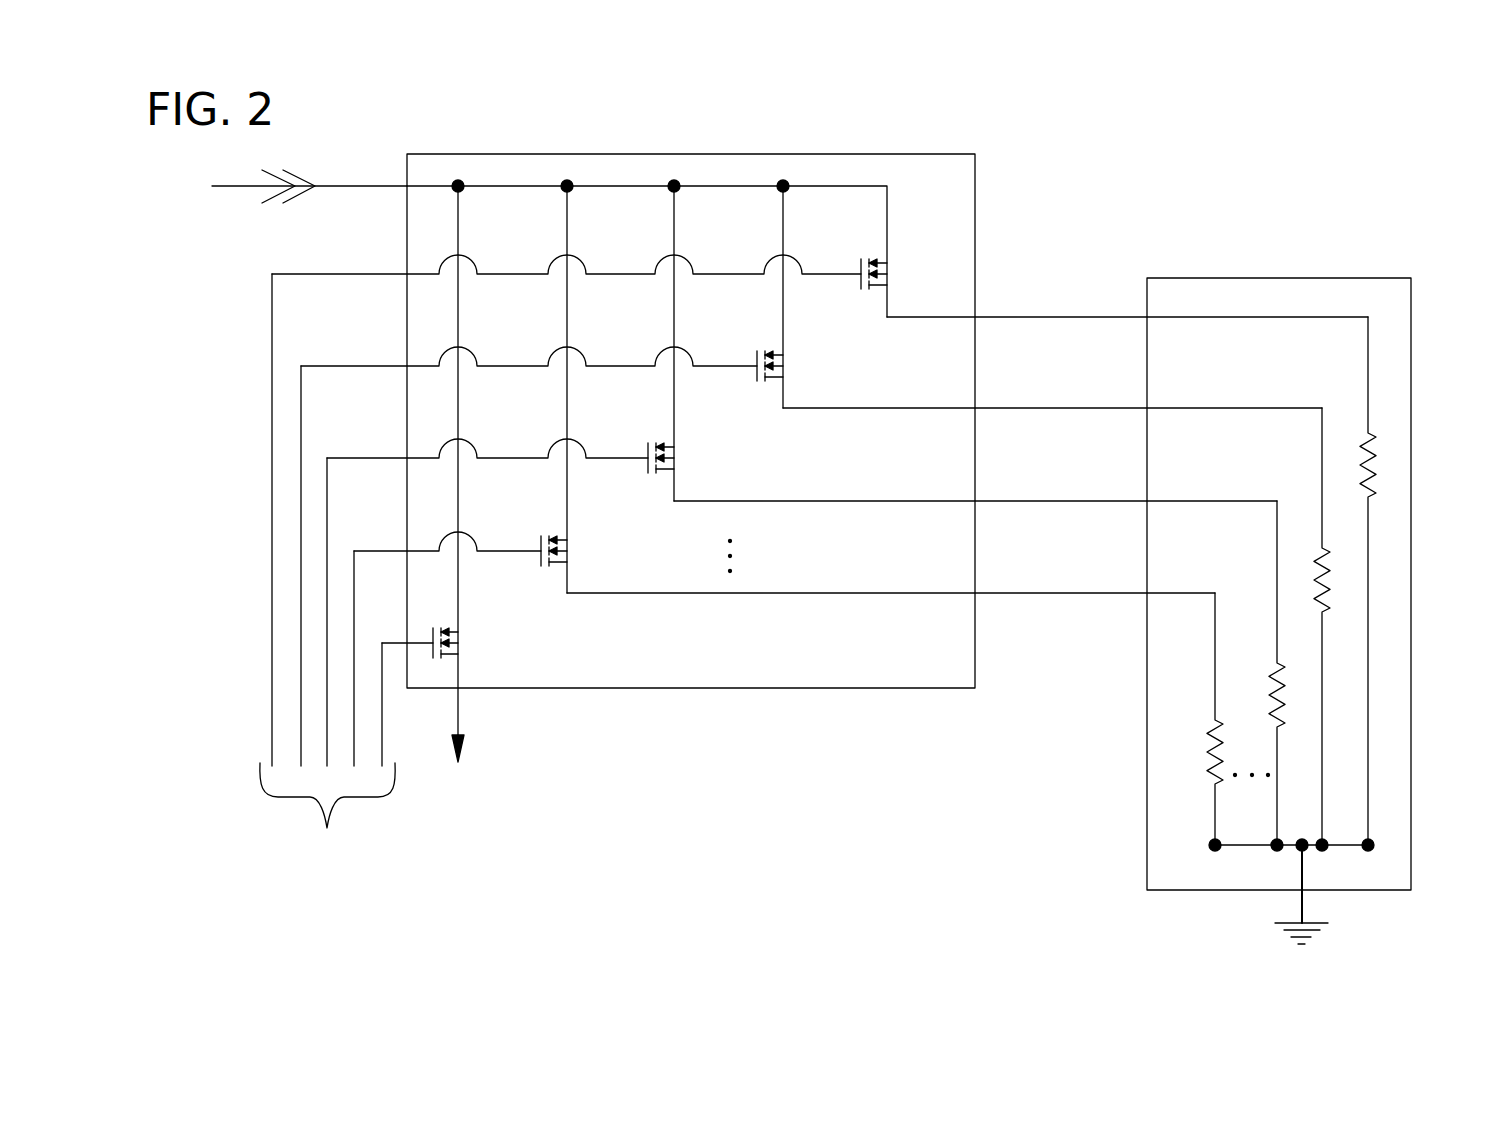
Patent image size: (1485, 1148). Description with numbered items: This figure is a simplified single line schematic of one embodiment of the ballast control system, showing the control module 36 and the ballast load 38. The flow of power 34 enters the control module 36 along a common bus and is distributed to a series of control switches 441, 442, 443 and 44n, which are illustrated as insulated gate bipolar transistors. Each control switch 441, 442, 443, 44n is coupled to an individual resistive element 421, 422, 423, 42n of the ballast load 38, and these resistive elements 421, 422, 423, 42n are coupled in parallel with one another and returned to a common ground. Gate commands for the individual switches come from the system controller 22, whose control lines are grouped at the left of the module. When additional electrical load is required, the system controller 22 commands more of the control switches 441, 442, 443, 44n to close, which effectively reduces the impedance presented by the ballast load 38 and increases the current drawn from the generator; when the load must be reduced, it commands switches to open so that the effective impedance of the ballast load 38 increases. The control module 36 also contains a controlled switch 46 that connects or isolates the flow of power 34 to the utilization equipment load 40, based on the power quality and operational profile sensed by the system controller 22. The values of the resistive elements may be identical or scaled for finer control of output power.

The flow of power 34 is at (347, 186).
The control module 36 is at (693, 154).
The ballast load 38 is at (1279, 278).
The control switch 441 is at (889, 266).
The control switch 442 is at (785, 359).
The control switch 443 is at (676, 451).
The control switch 44n is at (569, 544).
The controlled switch 46 is at (460, 636).
The utilization equipment load 40 is at (466, 773).
The system controller 22 is at (327, 577).
The resistive element 421 is at (1376, 465).
The resistive element 422 is at (1330, 576).
The resistive element 423 is at (1285, 693).
The resistive element 42n is at (1212, 768).